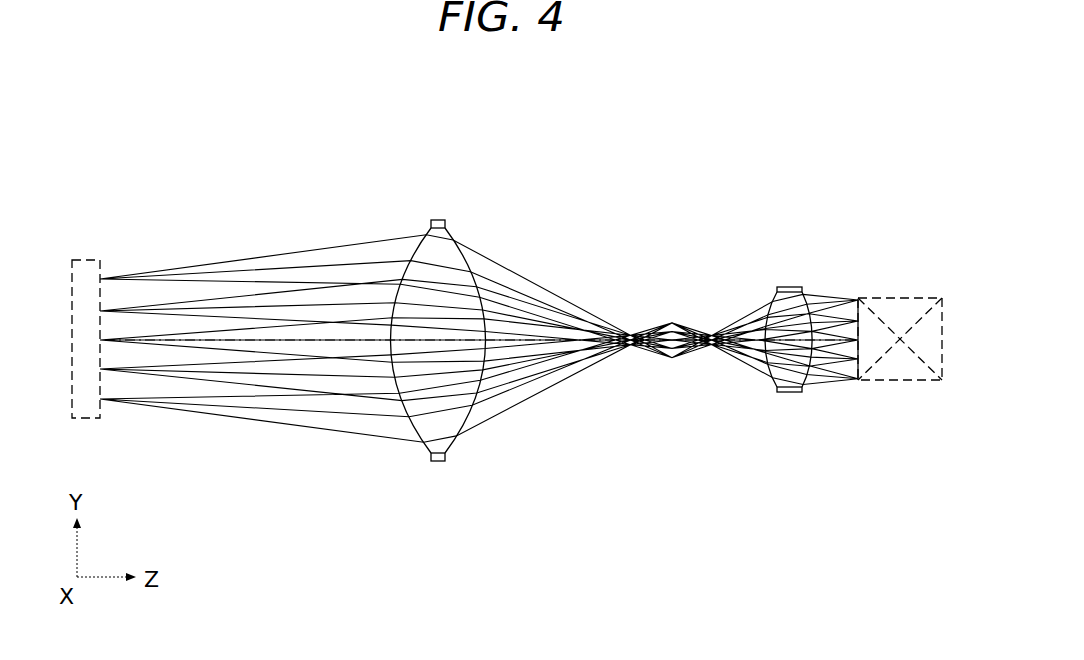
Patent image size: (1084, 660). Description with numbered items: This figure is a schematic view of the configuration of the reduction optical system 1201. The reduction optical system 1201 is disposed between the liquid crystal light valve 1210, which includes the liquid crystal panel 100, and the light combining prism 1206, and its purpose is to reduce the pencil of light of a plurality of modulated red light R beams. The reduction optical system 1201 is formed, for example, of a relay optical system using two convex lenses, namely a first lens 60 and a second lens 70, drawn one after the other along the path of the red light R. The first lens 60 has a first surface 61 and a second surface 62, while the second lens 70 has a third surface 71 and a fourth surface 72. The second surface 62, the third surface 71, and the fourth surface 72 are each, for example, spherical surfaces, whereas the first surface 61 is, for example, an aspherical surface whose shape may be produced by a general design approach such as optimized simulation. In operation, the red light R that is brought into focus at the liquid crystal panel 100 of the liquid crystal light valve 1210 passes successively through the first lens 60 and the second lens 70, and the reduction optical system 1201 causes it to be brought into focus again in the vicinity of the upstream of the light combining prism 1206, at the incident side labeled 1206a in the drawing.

The reduction optical system 1201 is at (815, 93).
The liquid crystal light valve 1210 is at (92, 259).
The liquid crystal panel 100 is at (86, 339).
The red light R is at (303, 245).
The first lens 60 is at (438, 220).
The first surface 61 is at (410, 442).
The second surface 62 is at (472, 442).
The second lens 70 is at (789, 287).
The third surface 71 is at (765, 388).
The fourth surface 72 is at (811, 388).
The light combining prism 1206 is at (910, 296).
The incident surface of light guide 1206a is at (856, 313).